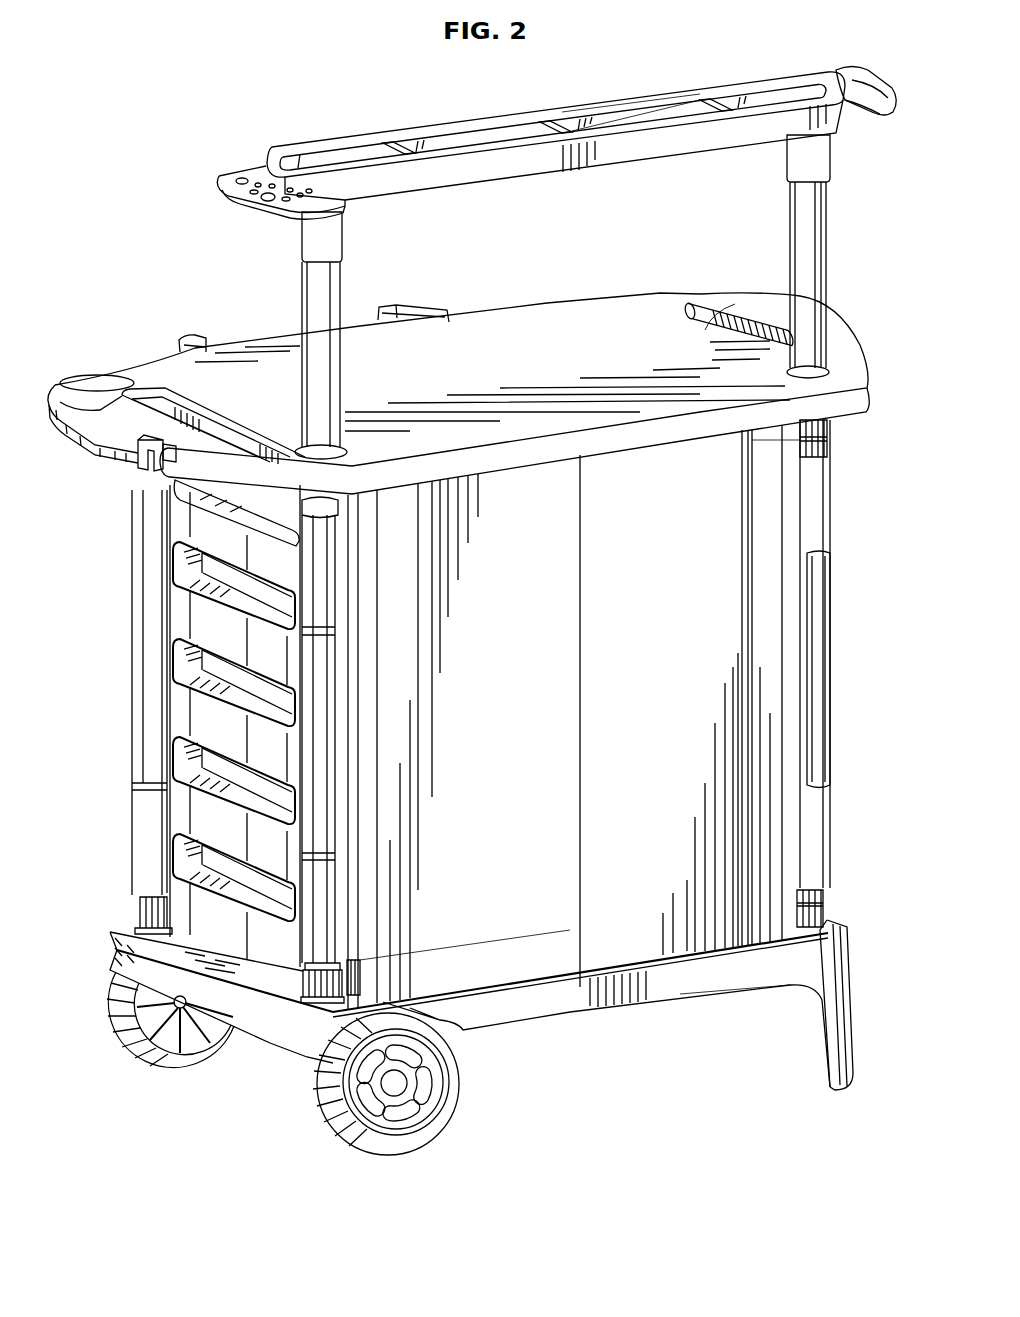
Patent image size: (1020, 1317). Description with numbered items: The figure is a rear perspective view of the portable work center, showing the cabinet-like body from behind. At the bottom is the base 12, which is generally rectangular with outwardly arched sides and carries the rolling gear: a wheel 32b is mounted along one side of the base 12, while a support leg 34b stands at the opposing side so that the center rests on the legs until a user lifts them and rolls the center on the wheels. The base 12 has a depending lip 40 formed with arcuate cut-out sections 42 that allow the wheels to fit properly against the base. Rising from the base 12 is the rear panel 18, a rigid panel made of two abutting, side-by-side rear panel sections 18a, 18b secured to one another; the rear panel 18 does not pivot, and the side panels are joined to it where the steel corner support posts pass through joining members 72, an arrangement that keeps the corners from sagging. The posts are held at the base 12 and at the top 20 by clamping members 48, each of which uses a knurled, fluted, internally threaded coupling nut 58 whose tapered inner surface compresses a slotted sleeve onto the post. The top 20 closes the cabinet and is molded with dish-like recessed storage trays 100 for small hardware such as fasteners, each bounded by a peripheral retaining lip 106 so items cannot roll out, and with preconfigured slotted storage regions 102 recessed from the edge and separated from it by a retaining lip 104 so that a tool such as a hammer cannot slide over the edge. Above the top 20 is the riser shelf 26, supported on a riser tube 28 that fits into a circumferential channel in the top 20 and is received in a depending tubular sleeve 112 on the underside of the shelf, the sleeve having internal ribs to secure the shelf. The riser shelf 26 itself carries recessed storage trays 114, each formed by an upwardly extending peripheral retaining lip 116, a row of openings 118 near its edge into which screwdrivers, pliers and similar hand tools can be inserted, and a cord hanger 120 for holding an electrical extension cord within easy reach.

The base 12 is at (623, 998).
The rear panel 18 is at (705, 674).
The rear panel section 18a is at (770, 532).
The rear panel section 18b is at (520, 947).
The top 20 is at (812, 298).
The riser shelf 26 is at (390, 126).
The first riser tube 28 is at (820, 272).
The wheel 32b is at (428, 1132).
The support leg 34b is at (852, 1045).
The depending lip 40 is at (713, 977).
The arcuate cut-out section 42 is at (450, 1022).
The clamping member 48 is at (142, 912).
The coupling nut 58 is at (823, 910).
The joining member 72 is at (313, 917).
The recessed storage tray 100 is at (100, 378).
The slotted storage region 102 is at (138, 445).
The retaining lip 104 is at (165, 458).
The peripheral retaining lip 106 is at (58, 395).
The tubular sleeve 112 is at (312, 240).
The recessed storage tray 114 is at (628, 115).
The peripheral retaining lip 116 is at (652, 96).
The opening 118 is at (236, 170).
The cord hanger 120 is at (858, 70).